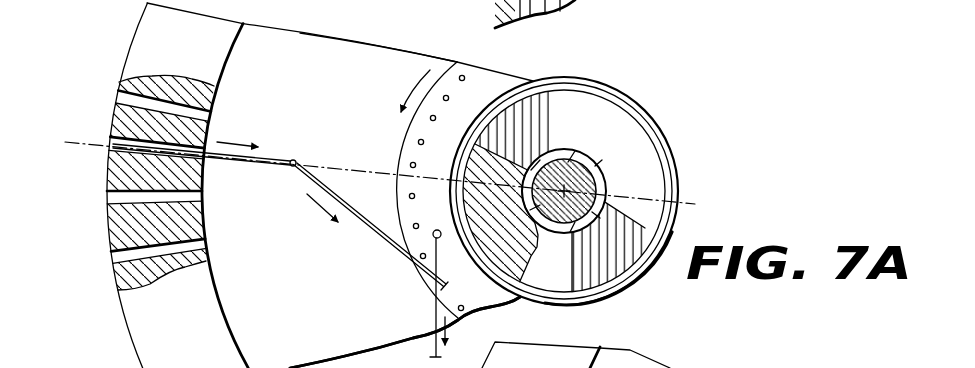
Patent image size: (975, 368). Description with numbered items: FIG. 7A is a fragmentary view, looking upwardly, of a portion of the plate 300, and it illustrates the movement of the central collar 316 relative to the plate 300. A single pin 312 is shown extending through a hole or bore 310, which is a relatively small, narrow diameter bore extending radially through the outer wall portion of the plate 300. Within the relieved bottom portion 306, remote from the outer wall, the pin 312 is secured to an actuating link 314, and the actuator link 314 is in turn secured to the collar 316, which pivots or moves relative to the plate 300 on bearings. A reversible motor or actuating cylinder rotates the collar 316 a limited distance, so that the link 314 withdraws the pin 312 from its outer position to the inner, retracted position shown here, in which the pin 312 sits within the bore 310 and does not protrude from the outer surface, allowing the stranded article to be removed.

The plate 300 is at (337, 52).
The relieved bottom portion 306 is at (393, 65).
The hole or bore 310 is at (128, 97).
The pin 312 is at (233, 170).
The pin actuator link 314 is at (383, 245).
The central collar 316 is at (415, 155).